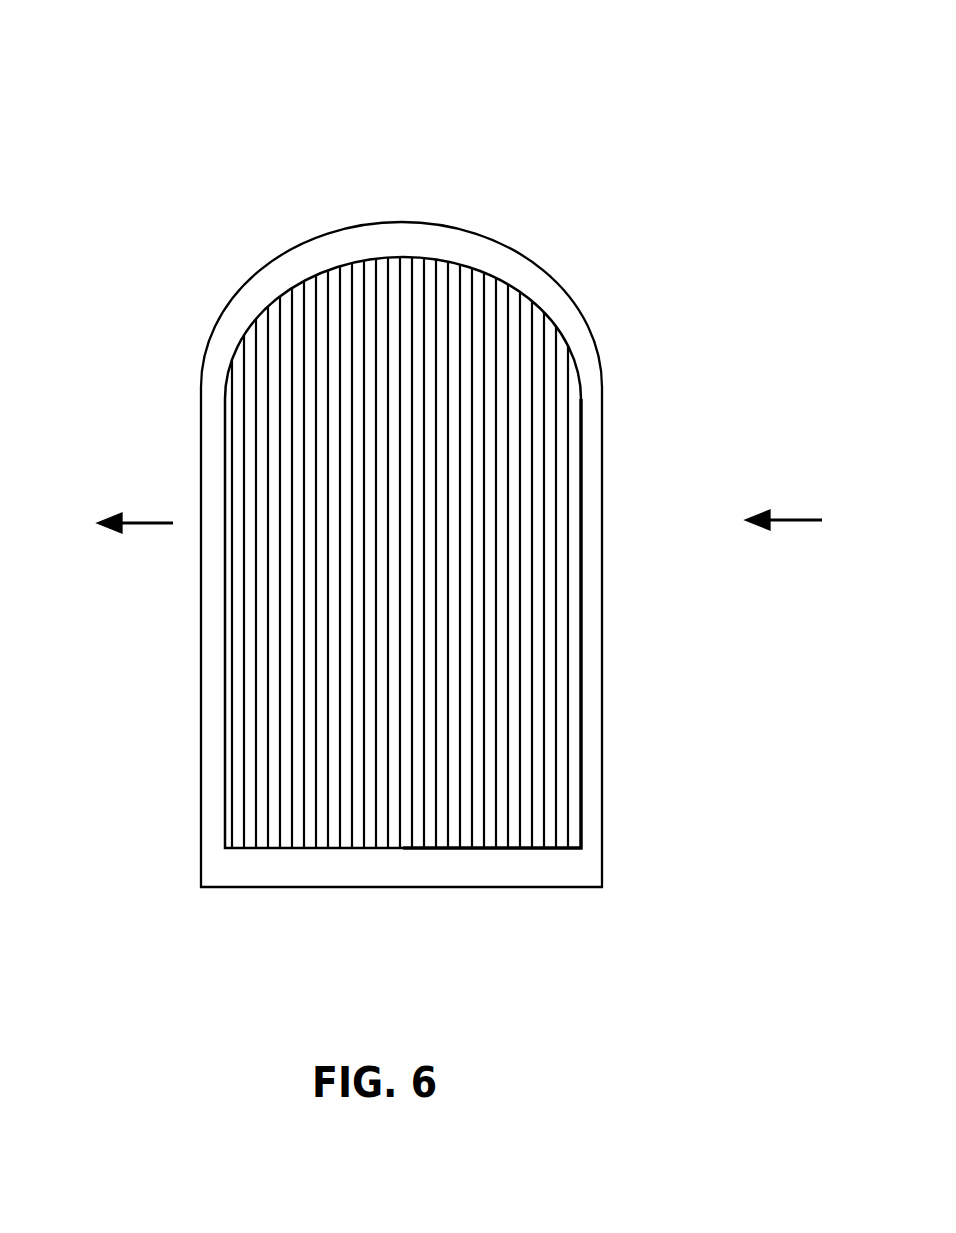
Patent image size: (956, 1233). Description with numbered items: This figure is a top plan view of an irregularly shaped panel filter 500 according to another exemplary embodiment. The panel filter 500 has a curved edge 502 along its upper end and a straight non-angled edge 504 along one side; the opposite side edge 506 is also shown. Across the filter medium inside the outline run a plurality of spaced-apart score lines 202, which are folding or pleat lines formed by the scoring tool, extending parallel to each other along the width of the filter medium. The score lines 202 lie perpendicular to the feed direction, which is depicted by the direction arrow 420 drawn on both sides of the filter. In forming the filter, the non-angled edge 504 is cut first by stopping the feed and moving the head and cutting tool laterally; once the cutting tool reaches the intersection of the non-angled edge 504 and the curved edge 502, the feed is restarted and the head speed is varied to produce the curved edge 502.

The panel filter 500 is at (163, 70).
The curved edge 502 is at (332, 268).
The non-angled edge 504 is at (225, 638).
The right side wall of fin enclosure 506 is at (581, 602).
The score lines 202 is at (517, 348).
The direction arrow 420 is at (138, 525).